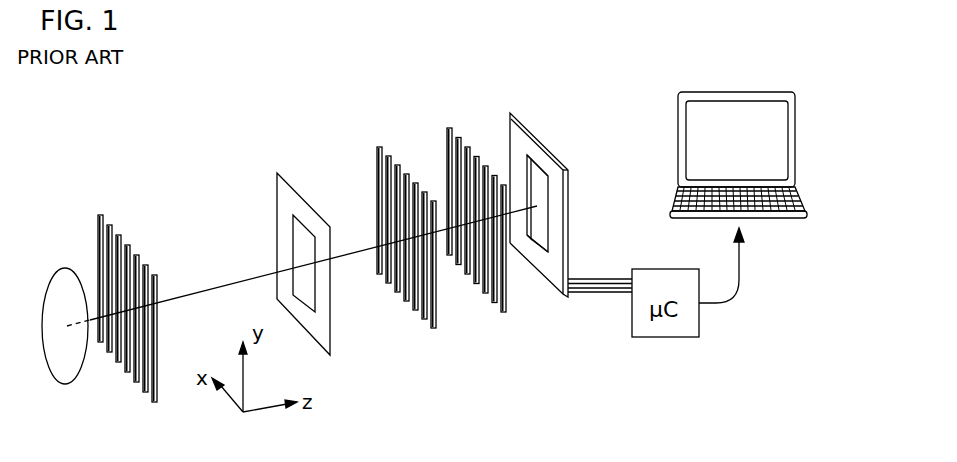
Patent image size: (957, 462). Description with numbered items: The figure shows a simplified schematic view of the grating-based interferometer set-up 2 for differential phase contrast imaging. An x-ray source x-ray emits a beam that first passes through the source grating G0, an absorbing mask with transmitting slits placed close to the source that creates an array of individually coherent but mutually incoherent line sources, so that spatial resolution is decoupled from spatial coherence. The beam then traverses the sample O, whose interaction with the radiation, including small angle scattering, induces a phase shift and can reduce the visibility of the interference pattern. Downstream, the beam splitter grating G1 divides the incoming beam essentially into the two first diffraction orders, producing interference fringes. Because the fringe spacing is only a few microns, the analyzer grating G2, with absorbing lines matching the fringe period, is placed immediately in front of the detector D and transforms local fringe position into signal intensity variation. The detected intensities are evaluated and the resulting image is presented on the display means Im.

The interferometer set-up 2 is at (148, 148).
The x-ray source x-ray is at (50, 296).
The source grating G0 is at (99, 214).
The sample O is at (279, 176).
The beam splitter grating G1 is at (378, 146).
The analyzer grating G2 is at (447, 127).
The detector D is at (511, 112).
The display means Im is at (678, 134).